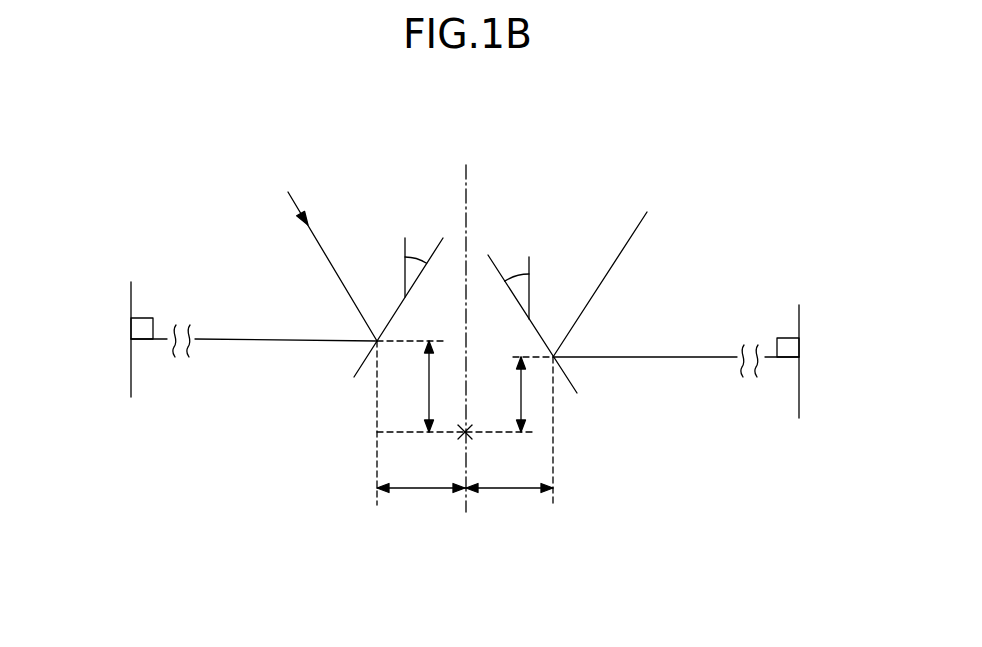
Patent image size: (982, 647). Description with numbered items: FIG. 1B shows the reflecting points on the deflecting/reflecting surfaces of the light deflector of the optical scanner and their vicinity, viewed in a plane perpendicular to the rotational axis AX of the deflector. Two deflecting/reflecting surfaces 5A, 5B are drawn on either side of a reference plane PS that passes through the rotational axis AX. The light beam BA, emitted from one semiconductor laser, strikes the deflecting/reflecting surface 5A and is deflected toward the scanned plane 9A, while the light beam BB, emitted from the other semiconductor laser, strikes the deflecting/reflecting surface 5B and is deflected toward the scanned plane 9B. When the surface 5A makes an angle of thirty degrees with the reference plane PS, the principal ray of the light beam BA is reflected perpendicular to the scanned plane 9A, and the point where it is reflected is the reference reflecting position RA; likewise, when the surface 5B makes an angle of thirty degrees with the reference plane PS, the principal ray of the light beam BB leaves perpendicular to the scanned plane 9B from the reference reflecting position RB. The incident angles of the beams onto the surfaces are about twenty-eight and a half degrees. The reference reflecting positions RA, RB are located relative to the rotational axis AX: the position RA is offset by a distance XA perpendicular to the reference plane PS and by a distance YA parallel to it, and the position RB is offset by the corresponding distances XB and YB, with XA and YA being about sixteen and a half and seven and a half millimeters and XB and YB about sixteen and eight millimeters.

The reference plane PS is at (467, 180).
The light beam BB is at (298, 210).
The light beam BA is at (633, 227).
The deflecting/reflecting surface 5B is at (360, 367).
The deflecting/reflecting surface 5A is at (570, 382).
The reference reflecting position RB is at (348, 325).
The reference reflecting position RA is at (587, 350).
The scanned plane 9B is at (131, 315).
The scanned plane 9A is at (799, 322).
The distance YB is at (421, 386).
The distance YA is at (509, 394).
The distance XB is at (421, 435).
The distance XA is at (509, 443).
The rotational axis AX is at (457, 432).